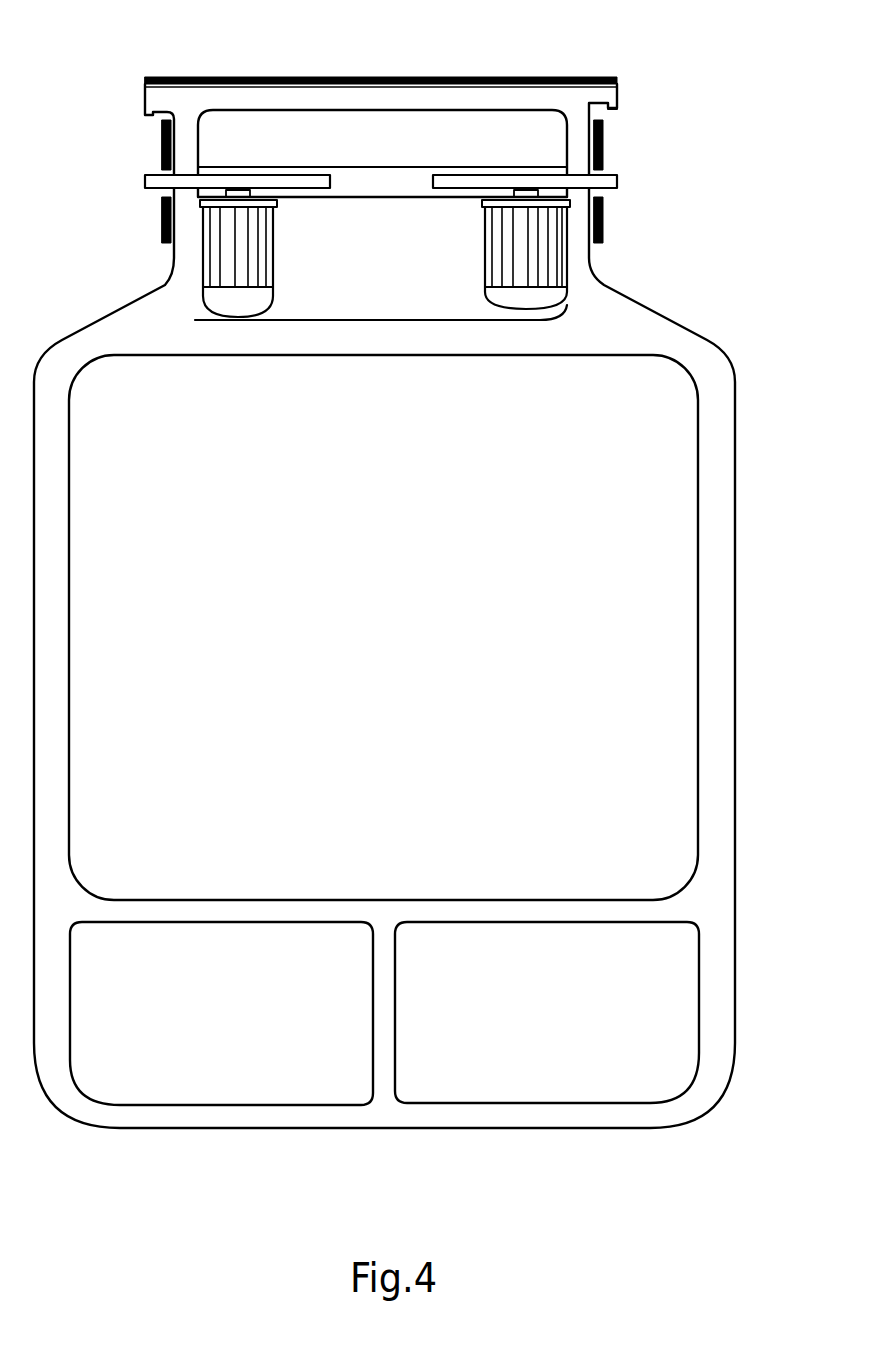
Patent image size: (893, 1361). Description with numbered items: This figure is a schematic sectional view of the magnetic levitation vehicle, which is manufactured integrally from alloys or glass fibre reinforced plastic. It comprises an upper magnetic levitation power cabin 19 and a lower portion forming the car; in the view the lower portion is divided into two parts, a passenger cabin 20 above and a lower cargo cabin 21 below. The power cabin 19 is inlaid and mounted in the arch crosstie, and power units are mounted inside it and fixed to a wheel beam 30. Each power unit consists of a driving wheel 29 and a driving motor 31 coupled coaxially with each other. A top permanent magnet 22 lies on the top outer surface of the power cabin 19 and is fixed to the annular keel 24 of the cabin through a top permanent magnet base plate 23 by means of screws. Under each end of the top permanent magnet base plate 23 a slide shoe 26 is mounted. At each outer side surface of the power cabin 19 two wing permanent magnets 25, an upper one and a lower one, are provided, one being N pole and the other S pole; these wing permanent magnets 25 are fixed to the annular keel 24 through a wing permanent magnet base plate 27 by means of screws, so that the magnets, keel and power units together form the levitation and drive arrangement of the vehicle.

The magnetic levitation power cabin 19 is at (342, 280).
The passenger cabin 20 is at (600, 770).
The lower cargo cabin 21 is at (535, 1060).
The top permanent magnet 22 is at (408, 78).
The top permanent magnet base plate 23 is at (197, 85).
The annular keel 24 is at (615, 335).
The wing permanent magnets 25 is at (162, 148).
The slide shoe 26 is at (615, 107).
The wing permanent magnet base plate 27 is at (173, 160).
The driving wheel 29 is at (617, 183).
The wheel beam 30 is at (400, 167).
The driving motor 31 is at (238, 267).